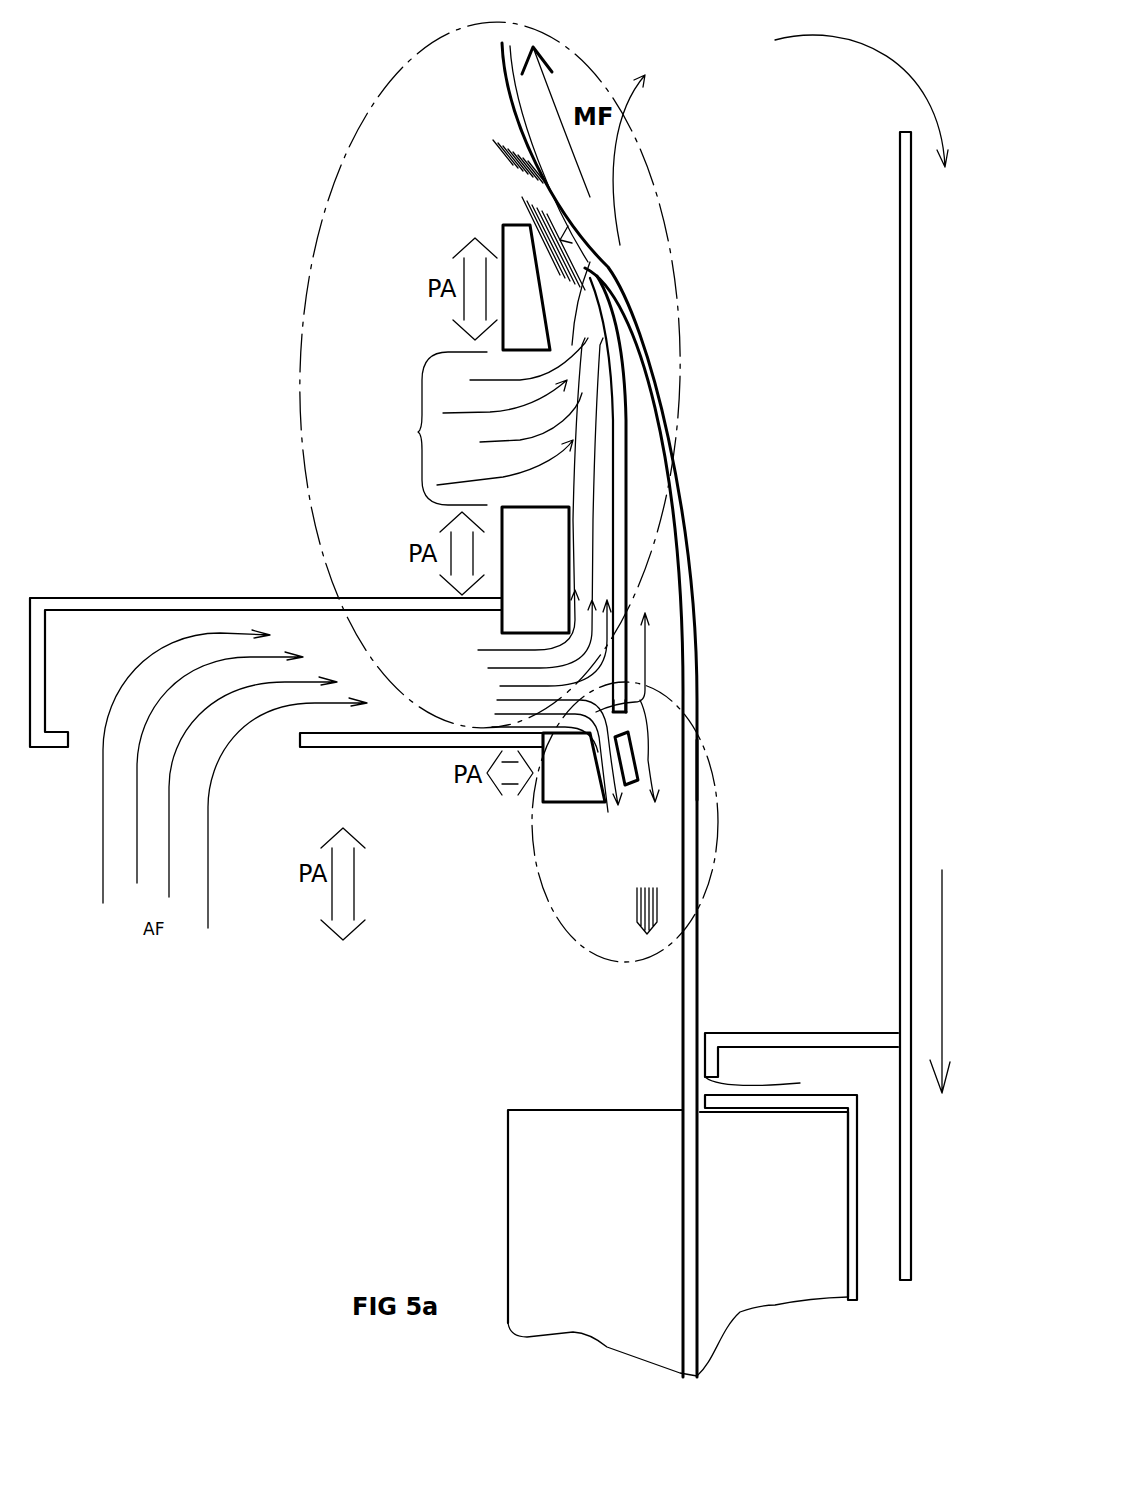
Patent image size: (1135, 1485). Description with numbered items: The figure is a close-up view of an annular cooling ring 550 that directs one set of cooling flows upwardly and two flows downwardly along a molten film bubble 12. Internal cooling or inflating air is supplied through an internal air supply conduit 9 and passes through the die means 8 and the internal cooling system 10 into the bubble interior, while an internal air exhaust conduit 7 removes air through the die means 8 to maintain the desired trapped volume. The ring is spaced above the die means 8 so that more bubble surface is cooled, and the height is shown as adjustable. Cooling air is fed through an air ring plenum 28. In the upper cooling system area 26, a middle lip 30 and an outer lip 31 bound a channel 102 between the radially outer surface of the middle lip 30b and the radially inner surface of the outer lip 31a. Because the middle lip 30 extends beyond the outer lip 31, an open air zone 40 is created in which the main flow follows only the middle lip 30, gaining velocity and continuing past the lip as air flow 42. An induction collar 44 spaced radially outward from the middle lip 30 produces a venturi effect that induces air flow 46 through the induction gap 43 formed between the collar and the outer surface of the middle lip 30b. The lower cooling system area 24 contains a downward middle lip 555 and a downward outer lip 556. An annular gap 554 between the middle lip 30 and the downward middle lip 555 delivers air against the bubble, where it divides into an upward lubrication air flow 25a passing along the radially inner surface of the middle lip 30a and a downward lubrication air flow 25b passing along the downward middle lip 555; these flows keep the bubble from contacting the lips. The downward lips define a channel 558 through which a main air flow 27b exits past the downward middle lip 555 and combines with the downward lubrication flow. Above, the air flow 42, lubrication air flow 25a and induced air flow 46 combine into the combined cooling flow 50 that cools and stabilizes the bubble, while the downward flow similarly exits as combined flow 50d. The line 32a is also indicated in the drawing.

The annular cooling ring 550 is at (173, 444).
The cooling system area 26 is at (298, 358).
The air ring plenum 28 is at (62, 637).
The outer lip 31 is at (518, 628).
The radially inner surface of the outer lip 31a is at (572, 552).
The induction collar 44 is at (515, 240).
The combined cooling flow 50 is at (498, 147).
The air flow 42 is at (548, 227).
The induction gap 43 is at (577, 307).
The open air zone 40 is at (418, 432).
The induced air flow 46 is at (490, 412).
The middle lip 30 is at (620, 440).
The radially inner surface of the middle lip 30a is at (628, 573).
The radially outer surface of the middle lip 30b is at (617, 557).
The molten film bubble 12 is at (620, 507).
The channel 32a is at (588, 495).
The channel 102 is at (588, 538).
The lubrication air flow 25a is at (645, 645).
The cooling system area 24 is at (535, 865).
The downward outer lip 556 is at (570, 785).
The downward middle lip 555 is at (610, 758).
The annular gap 554 is at (640, 718).
The channel 558 is at (655, 778).
The lubrication air flow 25b is at (700, 772).
The main air flow 27b is at (613, 813).
The lower outlet 50d is at (633, 923).
The internal air exhaust conduit 7 is at (898, 160).
The internal cooling system 10 is at (787, 1063).
The internal air supply conduit 9 is at (857, 1285).
The die means 8 is at (613, 1210).